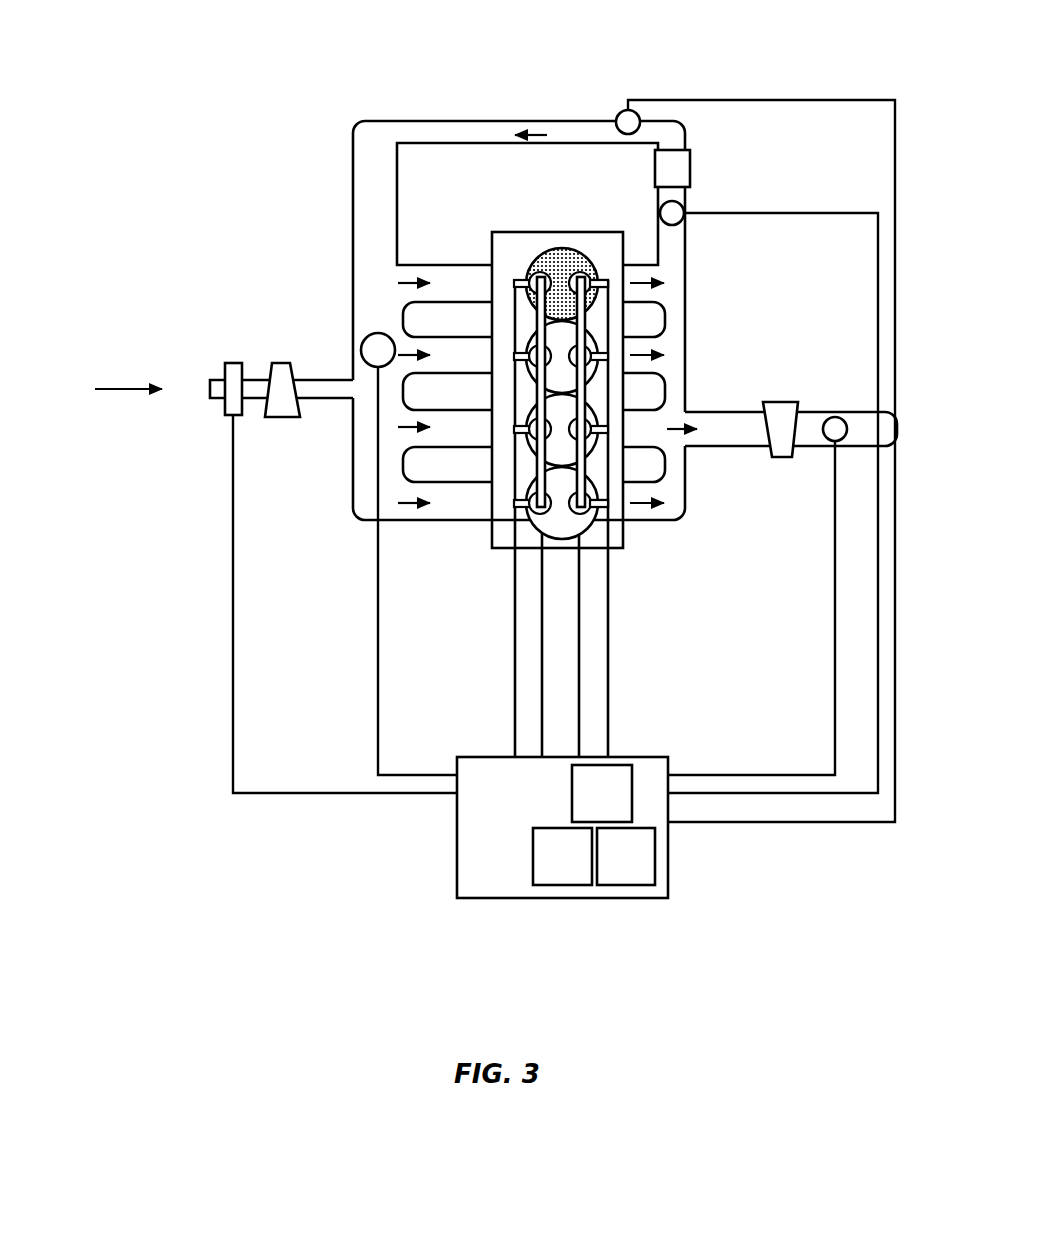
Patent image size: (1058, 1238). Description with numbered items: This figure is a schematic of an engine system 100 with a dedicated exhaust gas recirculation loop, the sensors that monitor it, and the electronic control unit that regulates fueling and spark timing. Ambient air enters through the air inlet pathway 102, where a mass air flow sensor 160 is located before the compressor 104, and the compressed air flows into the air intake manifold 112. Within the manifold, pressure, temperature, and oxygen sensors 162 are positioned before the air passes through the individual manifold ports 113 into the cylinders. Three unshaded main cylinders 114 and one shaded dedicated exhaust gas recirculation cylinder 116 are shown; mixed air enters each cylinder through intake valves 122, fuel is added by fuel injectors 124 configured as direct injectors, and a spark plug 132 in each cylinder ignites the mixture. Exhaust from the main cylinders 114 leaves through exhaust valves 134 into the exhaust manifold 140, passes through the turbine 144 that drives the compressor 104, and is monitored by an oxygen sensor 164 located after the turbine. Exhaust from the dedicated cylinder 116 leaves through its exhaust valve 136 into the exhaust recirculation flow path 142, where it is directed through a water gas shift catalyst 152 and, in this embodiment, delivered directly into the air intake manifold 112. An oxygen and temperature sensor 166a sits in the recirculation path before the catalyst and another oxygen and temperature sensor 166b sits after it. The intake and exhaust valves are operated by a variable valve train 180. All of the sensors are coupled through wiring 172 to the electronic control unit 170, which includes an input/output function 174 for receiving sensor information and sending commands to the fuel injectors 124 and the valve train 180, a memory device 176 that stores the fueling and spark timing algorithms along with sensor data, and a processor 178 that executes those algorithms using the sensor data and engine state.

The engine system 100 is at (296, 58).
The air inlet pathway 102 is at (262, 372).
The compressor 104 is at (280, 417).
The air intake manifold 112 is at (353, 262).
The manifold ports 113 is at (453, 508).
The main cylinders 114 is at (567, 434).
The dedicated exhaust gas recirculation cylinder 116 is at (582, 275).
The intake valves 122 is at (556, 497).
The fuel injectors 124 is at (530, 497).
The spark plug 132 is at (597, 280).
The exhaust valves 134 is at (590, 513).
The exhaust valve 136 is at (577, 268).
The exhaust manifold 140 is at (724, 448).
The exhaust recirculation flow path 142 is at (495, 121).
The turbine 144 is at (778, 402).
The water gas shift catalyst 152 is at (688, 172).
The mass air flow sensor 160 is at (237, 370).
The pressure, temperature, and oxygen sensors 162 is at (375, 333).
The oxygen sensor 164 is at (843, 415).
The oxygen and temperature sensor 166a is at (682, 205).
The oxygen and temperature sensor 166b is at (620, 112).
The electronic control unit 170 is at (545, 855).
The wiring 172 is at (233, 662).
The input/output function 174 is at (602, 793).
The memory device 176 is at (626, 856).
The processor 178 is at (562, 856).
The valve train 180 is at (580, 298).